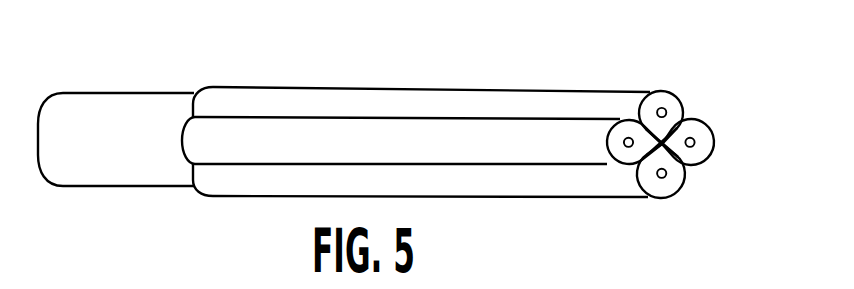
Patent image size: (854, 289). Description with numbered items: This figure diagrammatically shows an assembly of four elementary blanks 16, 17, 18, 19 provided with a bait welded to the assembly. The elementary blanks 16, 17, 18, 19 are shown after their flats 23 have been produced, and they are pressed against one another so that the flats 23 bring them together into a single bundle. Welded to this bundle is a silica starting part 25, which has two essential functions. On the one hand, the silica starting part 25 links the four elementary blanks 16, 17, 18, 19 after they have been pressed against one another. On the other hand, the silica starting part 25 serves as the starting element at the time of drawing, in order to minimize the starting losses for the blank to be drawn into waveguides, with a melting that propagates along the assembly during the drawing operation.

The elementary blank 16 is at (672, 102).
The elementary blank 17 is at (704, 145).
The elementary blank 18 is at (667, 190).
The elementary blank 19 is at (621, 156).
The flats 23 is at (678, 153).
The silica starting part 25 is at (115, 168).